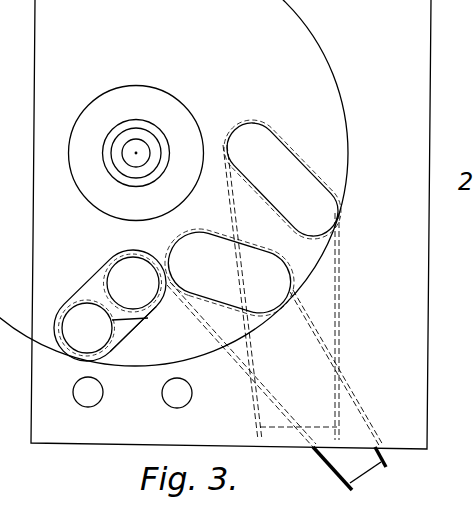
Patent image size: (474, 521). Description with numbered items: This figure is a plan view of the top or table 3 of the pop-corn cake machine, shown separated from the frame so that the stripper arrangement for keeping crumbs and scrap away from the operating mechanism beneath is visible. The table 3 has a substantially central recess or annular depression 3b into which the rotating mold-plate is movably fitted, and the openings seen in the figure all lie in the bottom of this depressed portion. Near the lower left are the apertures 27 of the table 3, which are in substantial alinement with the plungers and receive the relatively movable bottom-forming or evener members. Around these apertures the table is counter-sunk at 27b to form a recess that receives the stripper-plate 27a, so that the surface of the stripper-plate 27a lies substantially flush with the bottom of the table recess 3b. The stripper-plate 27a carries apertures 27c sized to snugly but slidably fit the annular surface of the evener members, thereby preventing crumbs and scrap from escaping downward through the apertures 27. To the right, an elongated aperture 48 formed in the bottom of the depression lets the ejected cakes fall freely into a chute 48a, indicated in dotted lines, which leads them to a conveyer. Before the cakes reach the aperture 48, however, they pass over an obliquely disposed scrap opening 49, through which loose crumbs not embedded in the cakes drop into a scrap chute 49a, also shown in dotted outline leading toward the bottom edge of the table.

The table 3 is at (416, 50).
The central recess or annular depression 3b is at (320, 82).
The elongated aperture 48 is at (305, 205).
The chute 48a is at (339, 305).
The scrap opening 49 is at (211, 247).
The scrap chute 49a is at (367, 471).
The apertures 27 is at (110, 305).
The stripper-plate 27a is at (100, 277).
The counter-sunk recess 27b is at (128, 333).
The apertures of stripper-plate 27c is at (148, 323).